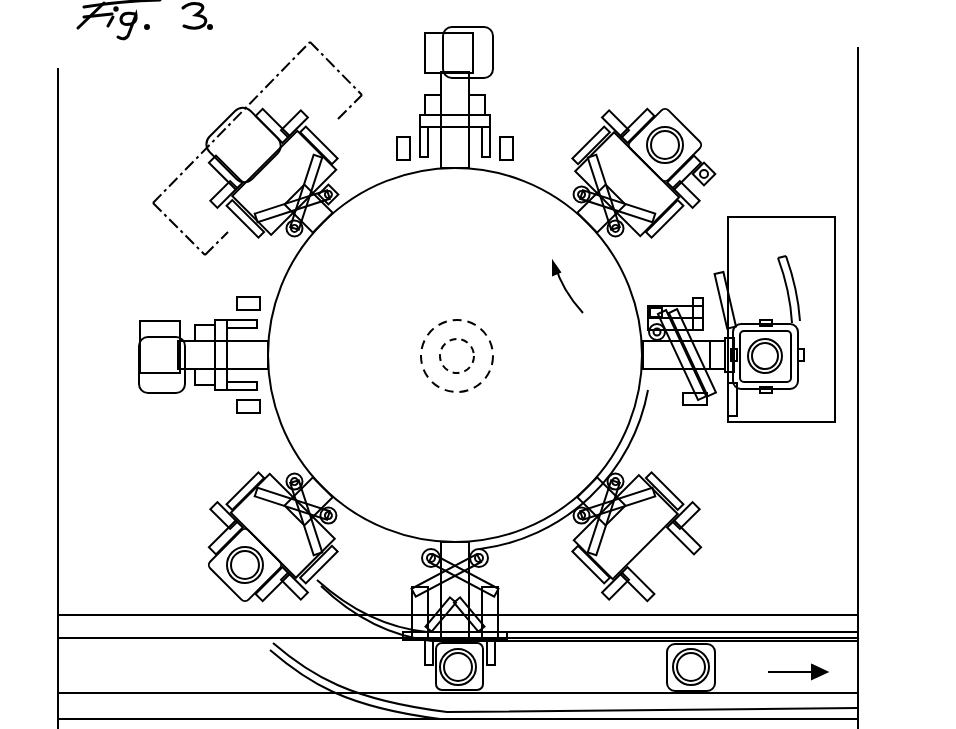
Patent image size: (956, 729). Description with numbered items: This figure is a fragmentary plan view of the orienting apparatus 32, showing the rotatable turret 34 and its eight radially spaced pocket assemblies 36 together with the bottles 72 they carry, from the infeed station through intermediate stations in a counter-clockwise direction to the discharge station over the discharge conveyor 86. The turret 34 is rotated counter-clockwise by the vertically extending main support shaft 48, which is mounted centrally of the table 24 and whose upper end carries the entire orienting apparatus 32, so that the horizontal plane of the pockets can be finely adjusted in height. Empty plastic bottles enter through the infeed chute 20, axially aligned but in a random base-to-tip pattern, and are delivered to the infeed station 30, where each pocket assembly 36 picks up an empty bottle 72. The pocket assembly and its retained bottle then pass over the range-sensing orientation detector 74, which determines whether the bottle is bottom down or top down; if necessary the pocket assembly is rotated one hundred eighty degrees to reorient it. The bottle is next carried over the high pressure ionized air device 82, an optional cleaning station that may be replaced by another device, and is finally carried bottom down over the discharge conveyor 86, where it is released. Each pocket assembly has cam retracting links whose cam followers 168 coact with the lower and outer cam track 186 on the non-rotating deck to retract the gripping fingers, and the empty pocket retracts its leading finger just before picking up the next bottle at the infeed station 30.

The infeed chute 20 is at (745, 322).
The table 24 is at (60, 502).
The infeed station 30 is at (797, 269).
The orienting apparatus 32 is at (528, 168).
The turret 34 is at (436, 250).
The pocket assembly 36 is at (336, 160).
The main support shaft 48 is at (470, 349).
The bottle 72 is at (497, 46).
The orientation detector 74 is at (714, 172).
The high pressure ionized air device 82 is at (262, 90).
The discharge conveyor 86 is at (745, 657).
The cam follower 168 is at (666, 402).
The lower and outer cam track 186 is at (640, 448).